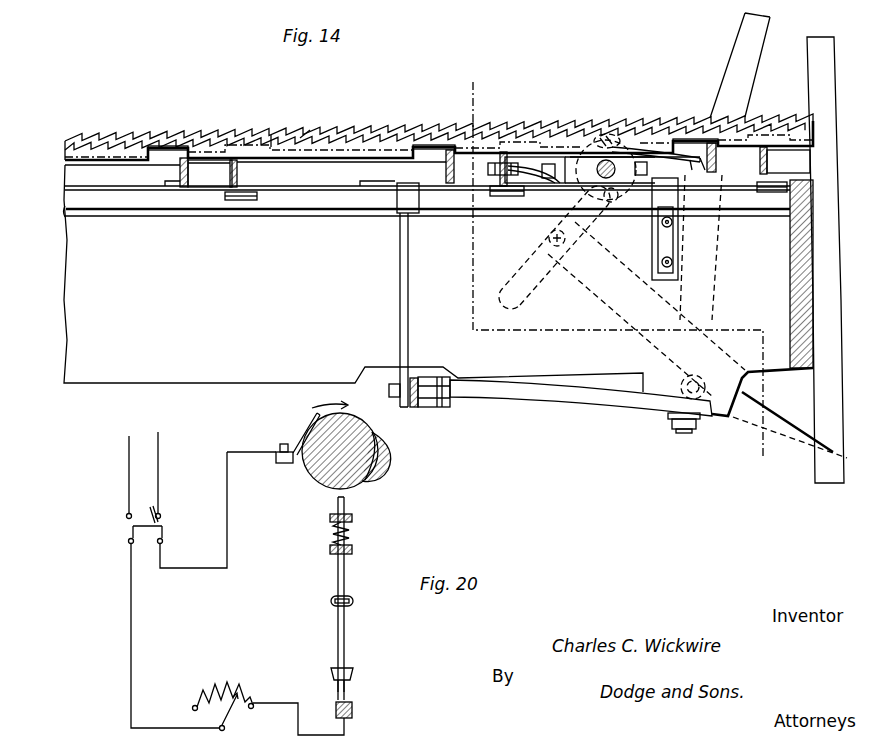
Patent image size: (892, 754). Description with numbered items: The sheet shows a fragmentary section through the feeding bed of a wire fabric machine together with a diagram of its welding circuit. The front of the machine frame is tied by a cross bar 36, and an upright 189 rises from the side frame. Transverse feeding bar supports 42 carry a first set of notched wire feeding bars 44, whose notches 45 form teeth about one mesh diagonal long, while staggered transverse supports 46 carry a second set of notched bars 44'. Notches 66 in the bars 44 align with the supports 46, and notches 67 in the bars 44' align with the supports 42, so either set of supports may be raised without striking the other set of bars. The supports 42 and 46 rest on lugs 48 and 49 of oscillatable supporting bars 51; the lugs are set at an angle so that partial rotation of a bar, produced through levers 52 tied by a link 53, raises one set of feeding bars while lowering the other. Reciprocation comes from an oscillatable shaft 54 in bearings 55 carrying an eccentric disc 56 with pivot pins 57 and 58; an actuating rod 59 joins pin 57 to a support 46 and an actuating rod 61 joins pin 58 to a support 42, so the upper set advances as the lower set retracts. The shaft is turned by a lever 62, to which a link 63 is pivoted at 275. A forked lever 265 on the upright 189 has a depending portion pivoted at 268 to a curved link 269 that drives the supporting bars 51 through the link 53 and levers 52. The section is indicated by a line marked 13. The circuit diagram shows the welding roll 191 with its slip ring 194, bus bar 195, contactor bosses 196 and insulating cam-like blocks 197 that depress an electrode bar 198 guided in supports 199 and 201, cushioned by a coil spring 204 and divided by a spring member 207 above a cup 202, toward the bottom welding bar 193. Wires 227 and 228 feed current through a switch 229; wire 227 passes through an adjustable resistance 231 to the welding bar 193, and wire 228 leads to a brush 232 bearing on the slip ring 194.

In FIG. 14, the section line 13 is at (770, 460).
In FIG. 14, the cross bar 36 is at (790, 293).
In FIG. 14, the transverse feeding bar support 42 is at (240, 178).
In FIG. 14, the notched wire feeding bar 44 is at (439, 114).
In FIG. 14, the notched bar 44' is at (435, 121).
In FIG. 14, the notch 45 is at (318, 136).
In FIG. 14, the transverse support 46 is at (178, 178).
In FIG. 14, the lug 48 is at (243, 200).
In FIG. 14, the lug 49 is at (173, 192).
In FIG. 14, the oscillatable supporting bar 51 is at (350, 217).
In FIG. 14, the lever 52 is at (398, 312).
In FIG. 14, the link 53 is at (418, 378).
In FIG. 14, the oscillatable shaft 54 is at (605, 160).
In FIG. 14, the bearing 55 is at (647, 149).
In FIG. 14, the eccentric disc 56 is at (575, 158).
In FIG. 14, the pivot pin 57 is at (620, 136).
In FIG. 14, the pivot pin 58 is at (600, 197).
In FIG. 14, the actuating rod 59 is at (692, 158).
In FIG. 14, the actuating rod 61 is at (548, 184).
In FIG. 14, the lever 62 is at (540, 290).
In FIG. 14, the link 63 is at (757, 388).
In FIG. 14, the notch 66 is at (164, 146).
In FIG. 14, the notch 67 is at (272, 133).
In FIG. 14, the upright 189 is at (820, 37).
In FIG. 14, the forked lever 265 is at (740, 30).
In FIG. 14, the pivot 268 is at (670, 374).
In FIG. 14, the curved link 269 is at (590, 382).
In FIG. 14, the pivot 275 is at (604, 240).
In FIG. 20, the welding roll 191 is at (330, 468).
In FIG. 20, the bottom welding bar 193 is at (352, 712).
In FIG. 20, the slip ring 194 is at (307, 465).
In FIG. 20, the bus bar 195 is at (368, 424).
In FIG. 20, the contactor boss 196 is at (390, 477).
In FIG. 20, the cam-like block 197 is at (391, 455).
In FIG. 20, the electrode bar 198 is at (335, 502).
In FIG. 20, the support 199 is at (352, 519).
In FIG. 20, the support 201 is at (352, 553).
In FIG. 20, the cup 202 is at (356, 670).
In FIG. 20, the coil spring 204 is at (333, 547).
In FIG. 20, the spring member 207 is at (331, 602).
In FIG. 20, the wire 227 is at (128, 447).
In FIG. 20, the wire 228 is at (160, 442).
In FIG. 20, the switch 229 is at (130, 527).
In FIG. 20, the adjustable resistance 231 is at (238, 690).
In FIG. 20, the brush 232 is at (300, 427).